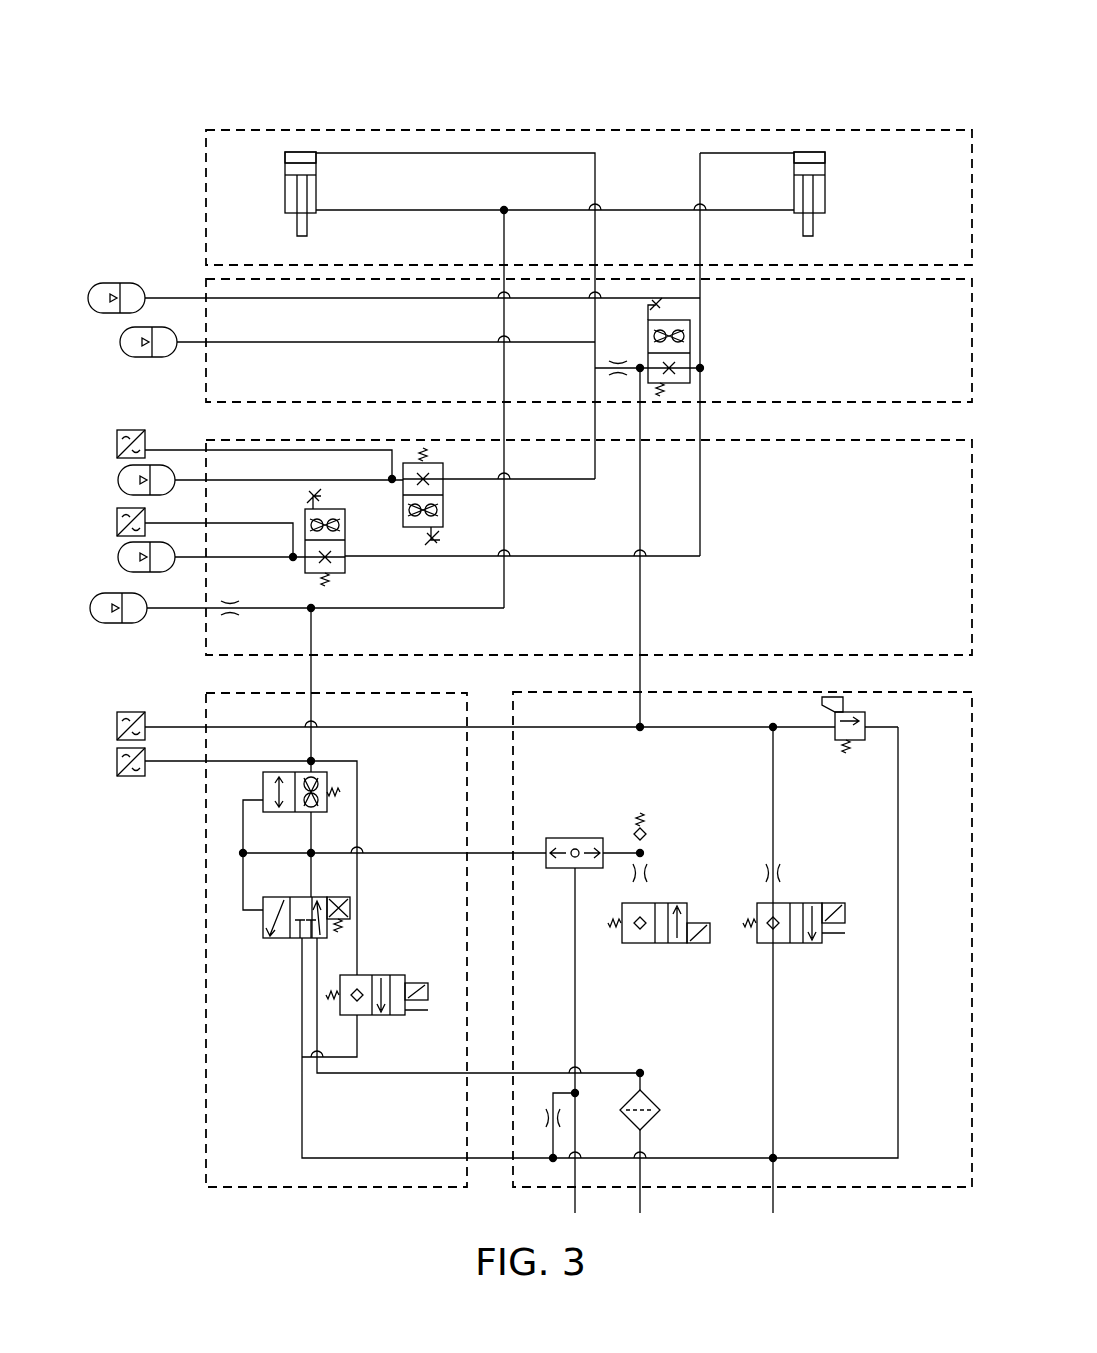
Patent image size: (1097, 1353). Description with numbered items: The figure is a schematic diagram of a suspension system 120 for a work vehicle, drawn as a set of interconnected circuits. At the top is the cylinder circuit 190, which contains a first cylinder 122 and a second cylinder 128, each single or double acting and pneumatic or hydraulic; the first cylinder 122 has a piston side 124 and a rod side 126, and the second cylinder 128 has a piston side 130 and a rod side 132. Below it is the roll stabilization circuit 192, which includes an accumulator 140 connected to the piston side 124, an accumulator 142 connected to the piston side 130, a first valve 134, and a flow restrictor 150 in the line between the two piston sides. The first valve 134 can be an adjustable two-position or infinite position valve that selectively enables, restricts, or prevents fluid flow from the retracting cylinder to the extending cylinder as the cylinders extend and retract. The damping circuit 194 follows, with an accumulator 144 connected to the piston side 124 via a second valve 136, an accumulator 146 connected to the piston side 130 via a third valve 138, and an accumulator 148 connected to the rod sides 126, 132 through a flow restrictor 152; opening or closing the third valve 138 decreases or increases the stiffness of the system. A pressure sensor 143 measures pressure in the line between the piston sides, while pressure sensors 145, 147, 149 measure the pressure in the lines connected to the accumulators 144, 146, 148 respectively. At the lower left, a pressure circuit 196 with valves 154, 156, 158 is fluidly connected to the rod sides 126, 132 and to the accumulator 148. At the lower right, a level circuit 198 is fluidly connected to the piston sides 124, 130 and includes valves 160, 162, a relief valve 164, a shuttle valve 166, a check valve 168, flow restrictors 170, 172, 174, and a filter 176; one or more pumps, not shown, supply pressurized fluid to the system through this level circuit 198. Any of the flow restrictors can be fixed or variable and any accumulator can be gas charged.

The suspension system 120 is at (408, 60).
The first cylinder 122 is at (286, 183).
The piston side of the first cylinder 124 is at (296, 152).
The rod side of the first cylinder 126 is at (286, 210).
The second cylinder 128 is at (825, 183).
The piston side of the second cylinder 130 is at (808, 152).
The rod side of the second cylinder 132 is at (825, 213).
The first valve 134 is at (690, 362).
The second valve 136 is at (443, 495).
The third valve 138 is at (347, 540).
The accumulator 140 is at (122, 345).
The accumulator 142 is at (88, 298).
The pressure sensor 143 is at (117, 727).
The accumulator 144 is at (117, 480).
The pressure sensor 145 is at (117, 448).
The accumulator 146 is at (118, 557).
The pressure sensor 147 is at (117, 523).
The accumulator 148 is at (92, 608).
The pressure sensor 149 is at (117, 762).
The flow restrictor 150 is at (618, 375).
The flow restrictor 152 is at (233, 622).
The valve 154 is at (243, 800).
The valve 156 is at (262, 917).
The valve 158 is at (382, 975).
The valve 160 is at (680, 945).
The valve 162 is at (835, 945).
The relief valve 164 is at (850, 742).
The shuttle valve 166 is at (567, 838).
The check valve 168 is at (650, 830).
The flow restrictor 170 is at (650, 873).
The flow restrictor 172 is at (783, 873).
The flow restrictor 174 is at (548, 1118).
The filter 176 is at (663, 1110).
The cylinder circuit 190 is at (925, 130).
The roll stabilization circuit 192 is at (848, 405).
The damping circuit 194 is at (808, 657).
The pressure circuit 196 is at (206, 1175).
The level circuit 198 is at (876, 1190).